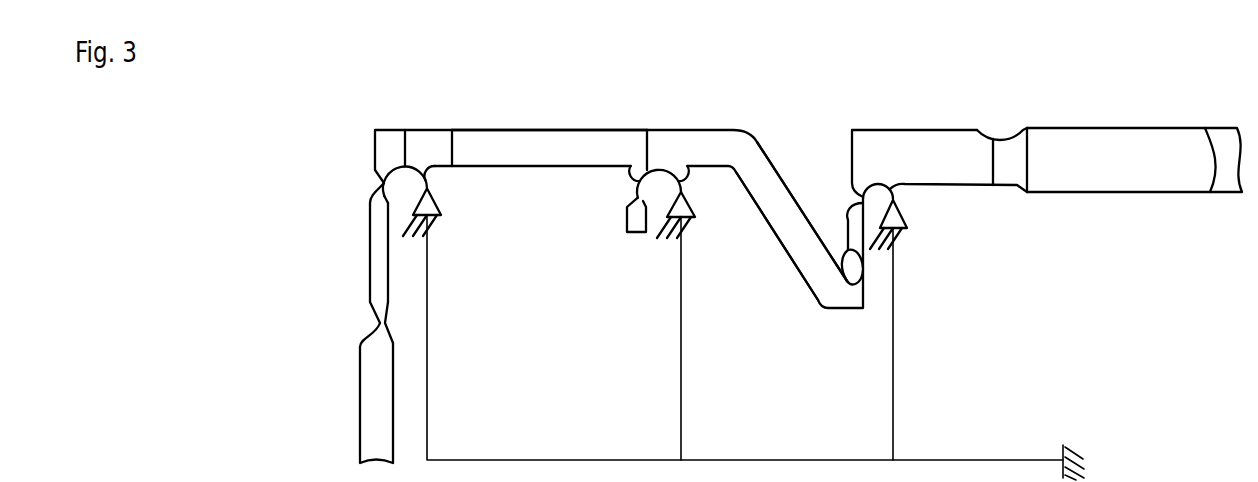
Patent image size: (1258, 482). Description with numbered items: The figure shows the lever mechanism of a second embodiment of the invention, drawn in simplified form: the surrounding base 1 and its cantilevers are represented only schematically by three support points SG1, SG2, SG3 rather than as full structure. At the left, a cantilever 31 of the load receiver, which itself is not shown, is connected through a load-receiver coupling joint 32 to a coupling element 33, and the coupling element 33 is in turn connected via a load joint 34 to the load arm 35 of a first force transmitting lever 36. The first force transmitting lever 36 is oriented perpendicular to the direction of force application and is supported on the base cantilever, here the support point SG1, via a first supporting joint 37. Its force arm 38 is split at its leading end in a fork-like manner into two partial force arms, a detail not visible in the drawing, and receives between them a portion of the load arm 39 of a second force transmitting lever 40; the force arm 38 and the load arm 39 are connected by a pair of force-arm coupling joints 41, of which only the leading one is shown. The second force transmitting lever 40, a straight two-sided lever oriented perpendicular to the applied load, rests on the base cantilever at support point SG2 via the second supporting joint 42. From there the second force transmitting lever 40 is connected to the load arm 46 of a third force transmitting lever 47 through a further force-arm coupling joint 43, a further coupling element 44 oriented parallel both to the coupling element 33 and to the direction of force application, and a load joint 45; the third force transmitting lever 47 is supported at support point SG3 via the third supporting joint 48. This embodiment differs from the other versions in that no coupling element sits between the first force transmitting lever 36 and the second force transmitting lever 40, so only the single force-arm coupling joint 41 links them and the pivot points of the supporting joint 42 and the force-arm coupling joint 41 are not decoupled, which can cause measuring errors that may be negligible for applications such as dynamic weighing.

The base 1 is at (1077, 447).
The cantilever 31 is at (377, 410).
The load-receiver coupling joint 32 is at (378, 322).
The coupling element 33 is at (380, 240).
The load joint 34 is at (382, 185).
The load arm 35 is at (392, 153).
The first force transmitting lever 36 is at (526, 123).
The first supporting joint 37 is at (429, 190).
The force arm 38 is at (565, 152).
The load arm 39 is at (660, 152).
The second force transmitting lever 40 is at (768, 135).
The force-arm coupling joint 41 is at (636, 184).
The second supporting joint 42 is at (688, 185).
The further force-arm coupling joint 43 is at (864, 268).
The further coupling element 44 is at (853, 227).
The load joint 45 is at (860, 197).
The load arm 46 is at (892, 163).
The third force transmitting lever 47 is at (978, 168).
The third supporting joint 48 is at (897, 199).
The support point SG1 is at (435, 214).
The support point SG2 is at (689, 215).
The support point SG3 is at (908, 222).